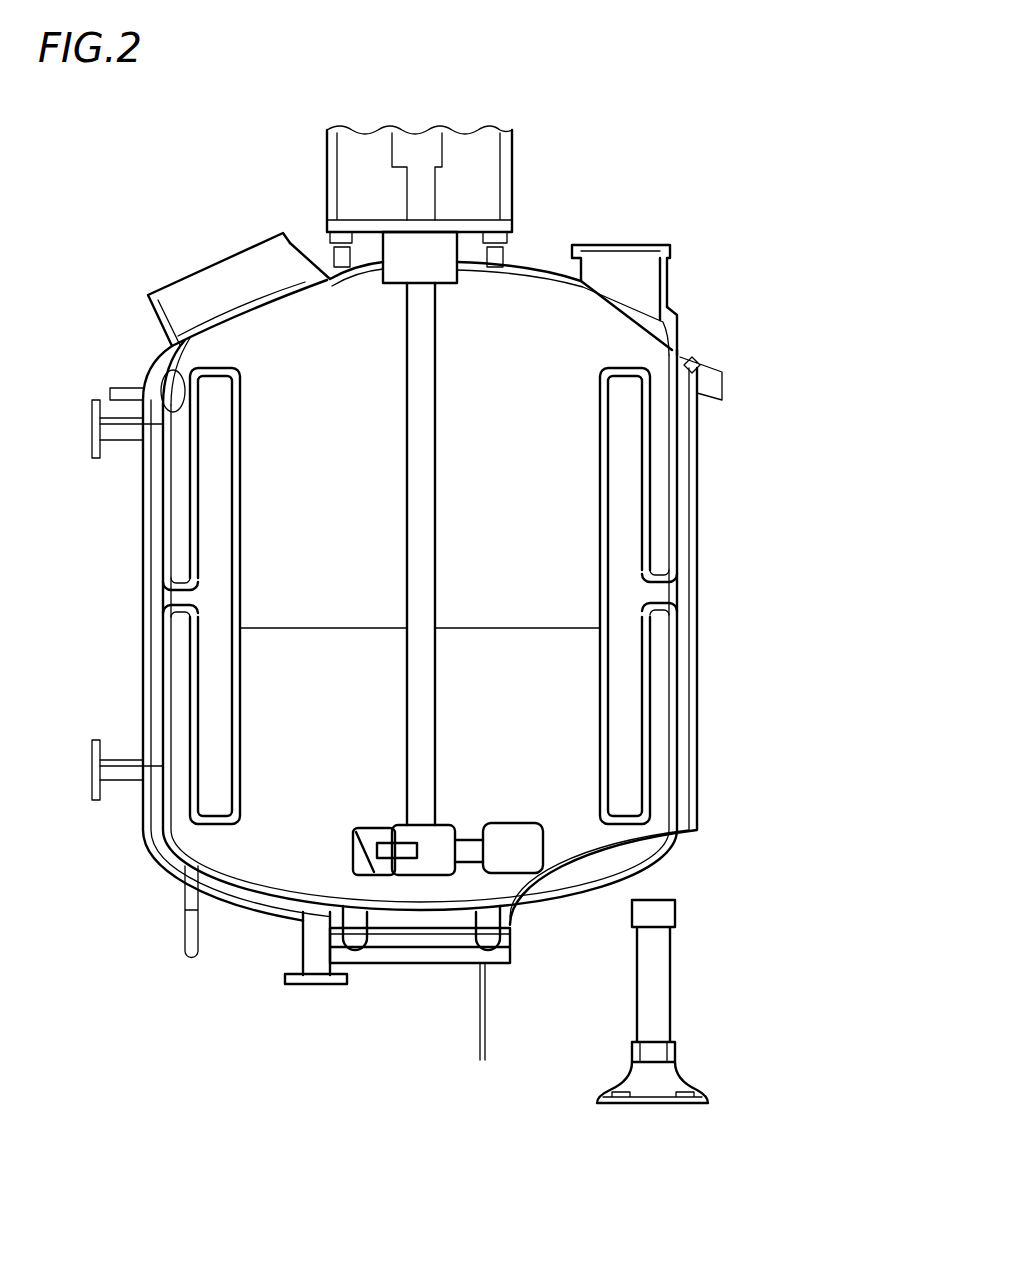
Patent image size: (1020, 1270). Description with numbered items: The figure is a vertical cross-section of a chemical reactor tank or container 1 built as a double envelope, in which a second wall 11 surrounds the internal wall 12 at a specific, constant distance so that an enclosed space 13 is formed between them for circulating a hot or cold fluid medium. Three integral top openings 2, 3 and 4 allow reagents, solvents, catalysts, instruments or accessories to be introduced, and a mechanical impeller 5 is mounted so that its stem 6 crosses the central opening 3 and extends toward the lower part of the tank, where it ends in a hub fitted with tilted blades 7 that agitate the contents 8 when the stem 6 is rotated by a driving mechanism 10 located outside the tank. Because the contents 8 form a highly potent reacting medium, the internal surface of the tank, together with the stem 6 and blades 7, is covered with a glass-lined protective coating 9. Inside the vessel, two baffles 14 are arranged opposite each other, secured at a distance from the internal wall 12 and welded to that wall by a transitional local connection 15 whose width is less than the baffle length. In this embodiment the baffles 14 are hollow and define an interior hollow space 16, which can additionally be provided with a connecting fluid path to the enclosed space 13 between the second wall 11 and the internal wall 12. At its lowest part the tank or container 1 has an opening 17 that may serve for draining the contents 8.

The tank or container 1 is at (778, 312).
The top opening 2 is at (170, 260).
The central opening 3 is at (437, 292).
The top opening 4 is at (620, 232).
The mechanical impeller 5 is at (392, 490).
The stem 6 is at (418, 383).
The tilted blades 7 is at (377, 845).
The contents 8 is at (320, 768).
The glass-lined protective coating 9 is at (183, 412).
The driving mechanism 10 is at (525, 150).
The second wall 11 is at (697, 652).
The internal wall 12 is at (678, 740).
The enclosed space 13 is at (683, 690).
The baffles 14 is at (656, 478).
The local connection 15 is at (650, 566).
The interior hollow space 16 is at (622, 440).
The opening 17 is at (418, 940).